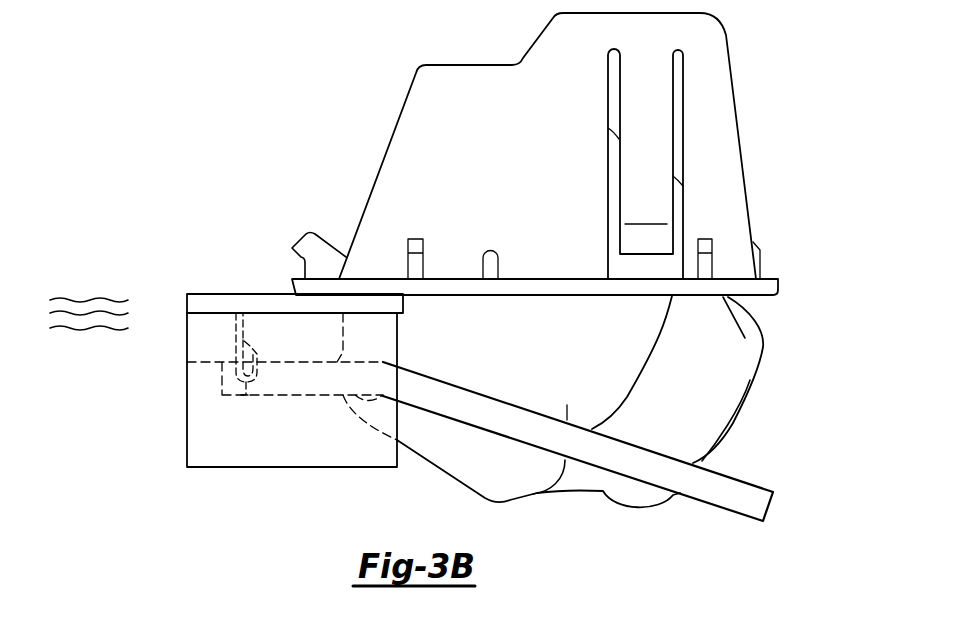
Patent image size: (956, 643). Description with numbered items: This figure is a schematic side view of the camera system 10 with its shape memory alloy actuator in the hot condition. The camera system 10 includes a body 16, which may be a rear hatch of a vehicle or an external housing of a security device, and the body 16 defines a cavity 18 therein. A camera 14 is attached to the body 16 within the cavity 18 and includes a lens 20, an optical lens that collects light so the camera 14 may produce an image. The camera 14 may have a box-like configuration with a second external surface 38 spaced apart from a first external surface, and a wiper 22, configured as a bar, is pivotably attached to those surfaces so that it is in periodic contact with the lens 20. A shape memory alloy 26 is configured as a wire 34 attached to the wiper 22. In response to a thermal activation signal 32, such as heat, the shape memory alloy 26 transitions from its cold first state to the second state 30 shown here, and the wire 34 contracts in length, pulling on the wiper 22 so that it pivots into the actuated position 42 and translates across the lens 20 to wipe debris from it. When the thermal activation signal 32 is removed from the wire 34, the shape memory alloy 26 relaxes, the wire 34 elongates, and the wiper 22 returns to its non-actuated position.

The camera system 10 is at (172, 147).
The camera 14 is at (567, 496).
The body 16 is at (741, 153).
The cavity 18 is at (756, 305).
The lens 20 is at (730, 427).
The wiper 22 is at (775, 508).
The shape memory alloy 26 is at (177, 377).
The second state 30 is at (250, 421).
The thermal activation signal 32 is at (98, 298).
The wire 34 is at (222, 395).
The second external surface 38 is at (547, 360).
The actuated position 42 is at (814, 461).